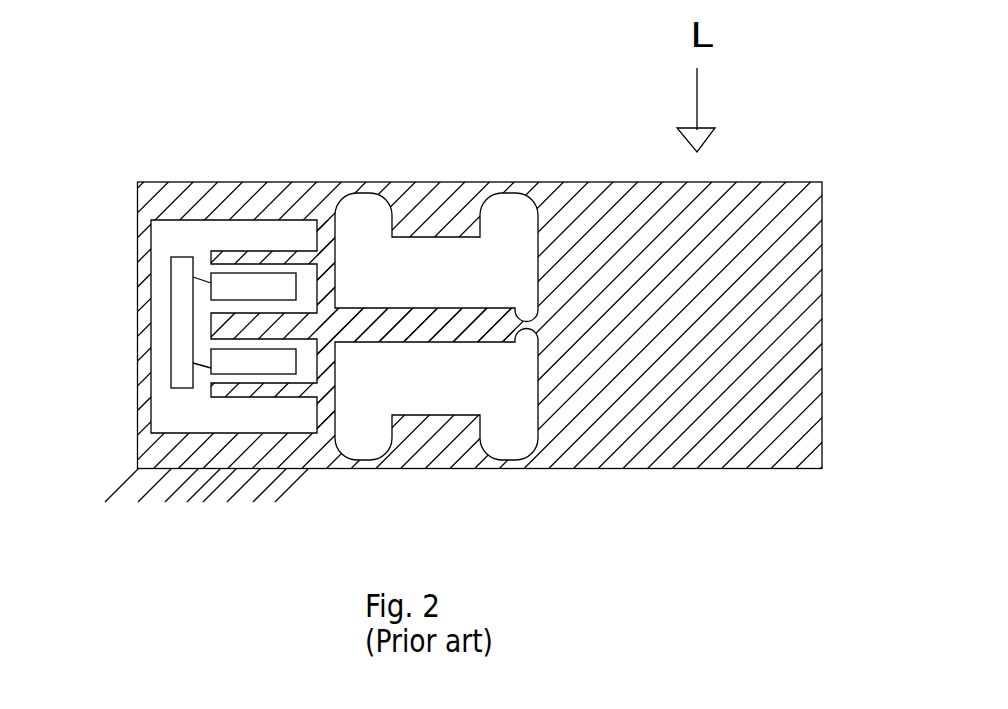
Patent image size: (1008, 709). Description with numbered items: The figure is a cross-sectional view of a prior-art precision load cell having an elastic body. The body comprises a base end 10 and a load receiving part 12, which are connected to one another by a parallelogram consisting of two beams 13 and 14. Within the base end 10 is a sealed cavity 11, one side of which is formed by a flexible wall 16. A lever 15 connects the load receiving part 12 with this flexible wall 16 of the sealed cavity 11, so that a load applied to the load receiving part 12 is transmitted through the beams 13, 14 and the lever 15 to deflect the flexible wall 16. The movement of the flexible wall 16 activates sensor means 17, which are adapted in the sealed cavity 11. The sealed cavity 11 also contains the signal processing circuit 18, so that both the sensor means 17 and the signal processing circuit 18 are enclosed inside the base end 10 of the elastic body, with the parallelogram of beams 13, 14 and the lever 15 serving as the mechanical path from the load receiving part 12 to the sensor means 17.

The base end 10 is at (207, 510).
The sealed cavity 11 is at (176, 318).
The load receiving part 12 is at (504, 284).
The beam 13 is at (440, 225).
The beam 14 is at (442, 435).
The lever 15 is at (504, 325).
The flexible wall 16 is at (504, 325).
The sensor means 17 is at (279, 343).
The signal processing circuit 18 is at (120, 322).